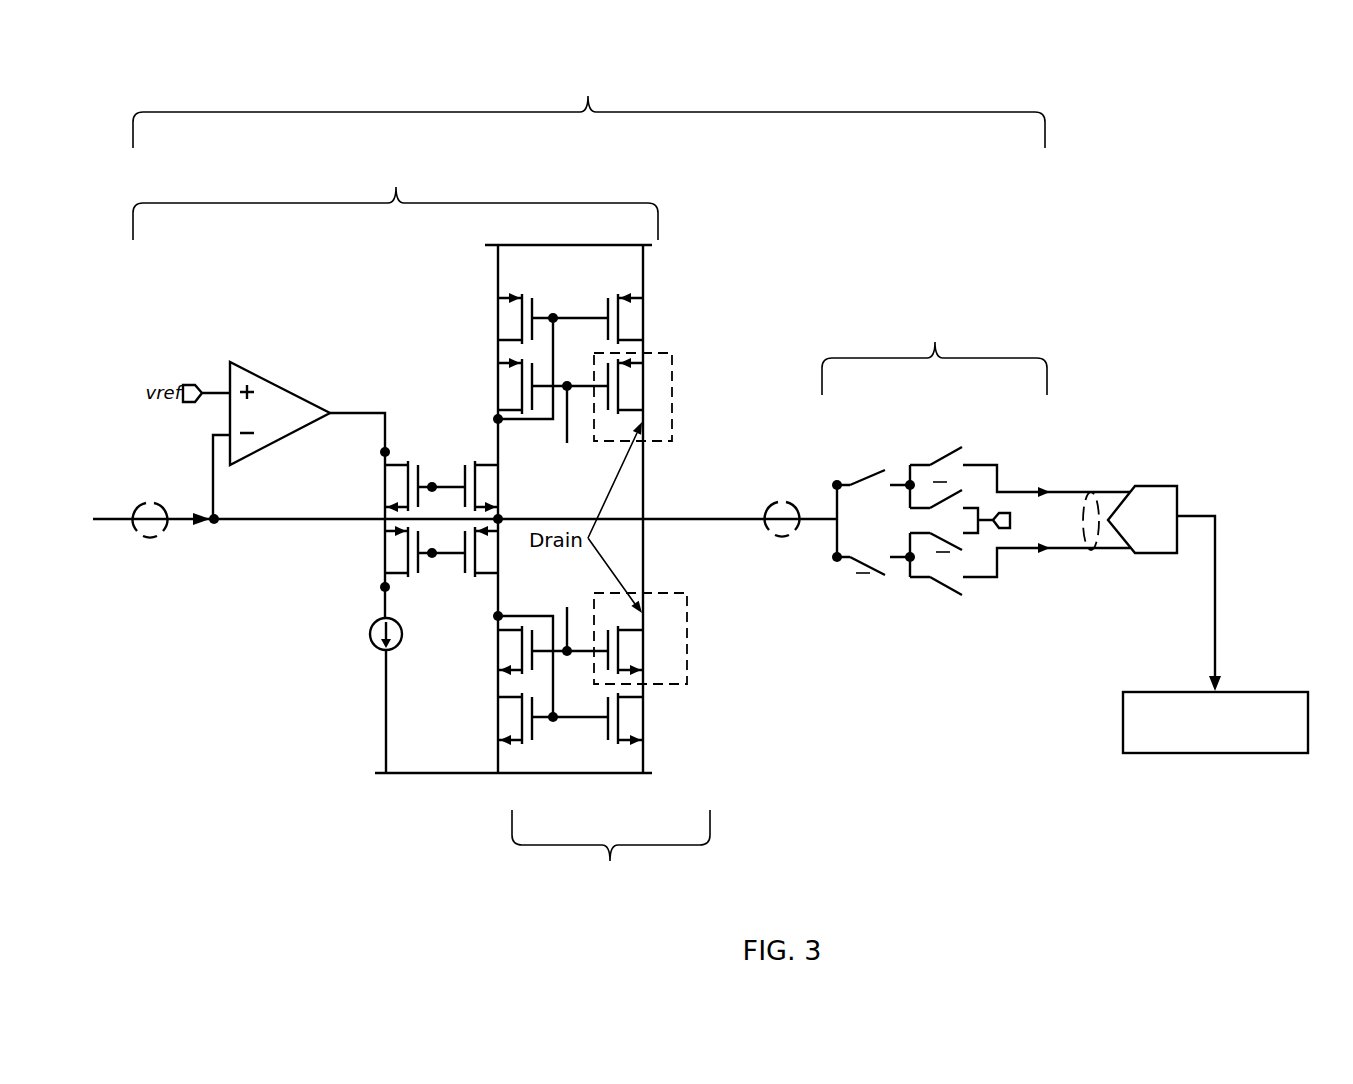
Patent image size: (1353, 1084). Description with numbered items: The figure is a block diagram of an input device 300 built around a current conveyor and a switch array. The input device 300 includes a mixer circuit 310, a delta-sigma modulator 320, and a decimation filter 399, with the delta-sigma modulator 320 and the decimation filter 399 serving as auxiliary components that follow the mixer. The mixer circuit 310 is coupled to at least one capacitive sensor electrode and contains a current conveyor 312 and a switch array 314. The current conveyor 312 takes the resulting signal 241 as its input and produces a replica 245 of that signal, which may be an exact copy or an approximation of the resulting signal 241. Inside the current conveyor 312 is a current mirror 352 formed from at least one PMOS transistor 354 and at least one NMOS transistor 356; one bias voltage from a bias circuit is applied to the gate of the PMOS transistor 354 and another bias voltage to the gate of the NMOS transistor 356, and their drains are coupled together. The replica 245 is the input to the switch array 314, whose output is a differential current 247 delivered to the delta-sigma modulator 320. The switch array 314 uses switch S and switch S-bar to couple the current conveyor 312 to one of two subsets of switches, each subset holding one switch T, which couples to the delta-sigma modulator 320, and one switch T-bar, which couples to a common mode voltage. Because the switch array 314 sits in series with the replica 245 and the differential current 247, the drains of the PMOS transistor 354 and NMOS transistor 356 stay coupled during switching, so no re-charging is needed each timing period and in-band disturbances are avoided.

The input device 300 is at (1182, 256).
The mixer circuit 310 is at (589, 94).
The current conveyor 312 is at (395, 186).
The switch array 314 is at (976, 451).
The delta-sigma modulator 320 is at (1139, 517).
The current mirror 352 is at (633, 591).
The PMOS transistor 354 is at (652, 392).
The NMOS transistor 356 is at (666, 648).
The decimation filter 399 is at (1203, 746).
The resulting signal 241 is at (150, 537).
The replica 245 is at (772, 533).
The differential current 247 is at (1094, 471).